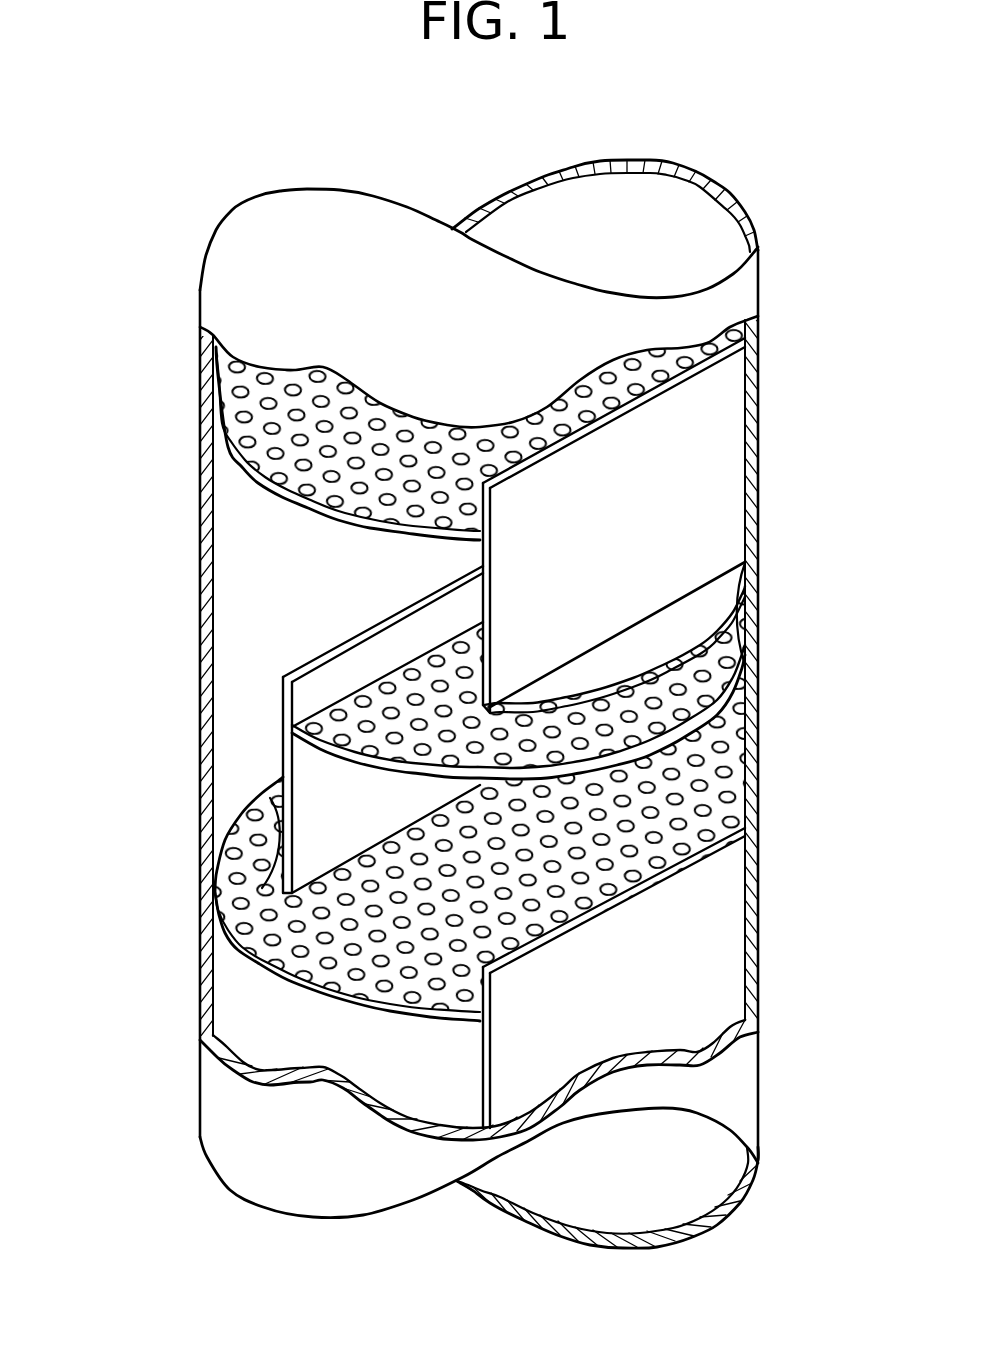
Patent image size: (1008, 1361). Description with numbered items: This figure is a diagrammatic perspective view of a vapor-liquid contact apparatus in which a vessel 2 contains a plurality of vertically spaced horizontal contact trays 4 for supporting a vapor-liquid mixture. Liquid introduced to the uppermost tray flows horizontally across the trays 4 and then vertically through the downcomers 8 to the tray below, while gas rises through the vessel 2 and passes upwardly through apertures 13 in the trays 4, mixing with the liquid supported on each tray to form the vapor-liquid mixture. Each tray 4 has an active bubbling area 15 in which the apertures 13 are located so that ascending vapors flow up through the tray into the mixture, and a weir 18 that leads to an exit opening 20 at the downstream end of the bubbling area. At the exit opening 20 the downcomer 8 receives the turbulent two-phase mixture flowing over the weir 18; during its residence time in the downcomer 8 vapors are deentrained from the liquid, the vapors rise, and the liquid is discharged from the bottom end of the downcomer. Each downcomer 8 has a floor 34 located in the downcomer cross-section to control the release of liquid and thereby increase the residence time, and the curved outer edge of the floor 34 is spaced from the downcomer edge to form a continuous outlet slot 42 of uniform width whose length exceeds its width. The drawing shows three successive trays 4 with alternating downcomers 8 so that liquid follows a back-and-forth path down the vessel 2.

The vessel 2 is at (762, 232).
The contact tray 4 is at (762, 352).
The downcomer 8 is at (733, 457).
The apertures 13 is at (237, 420).
The active bubbling area 15 is at (300, 430).
The weir 18 is at (707, 423).
The exit opening 20 is at (723, 387).
The downcomer floor 34 is at (723, 587).
The outlet slot 42 is at (738, 602).